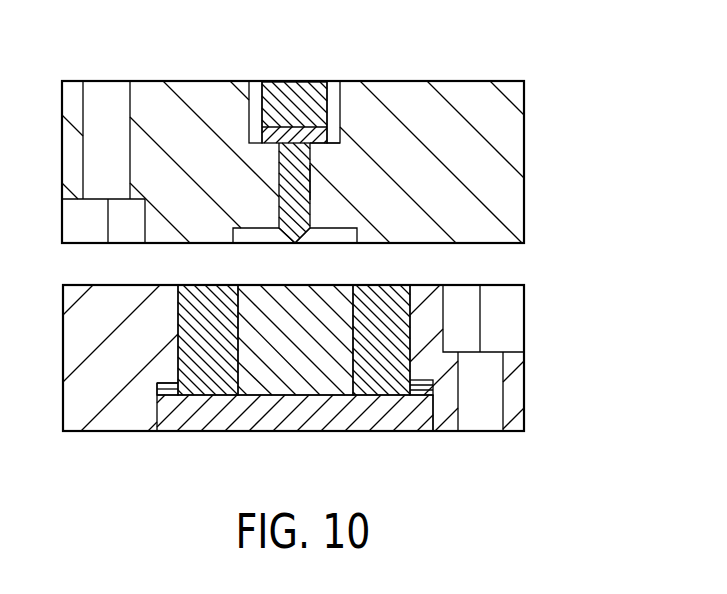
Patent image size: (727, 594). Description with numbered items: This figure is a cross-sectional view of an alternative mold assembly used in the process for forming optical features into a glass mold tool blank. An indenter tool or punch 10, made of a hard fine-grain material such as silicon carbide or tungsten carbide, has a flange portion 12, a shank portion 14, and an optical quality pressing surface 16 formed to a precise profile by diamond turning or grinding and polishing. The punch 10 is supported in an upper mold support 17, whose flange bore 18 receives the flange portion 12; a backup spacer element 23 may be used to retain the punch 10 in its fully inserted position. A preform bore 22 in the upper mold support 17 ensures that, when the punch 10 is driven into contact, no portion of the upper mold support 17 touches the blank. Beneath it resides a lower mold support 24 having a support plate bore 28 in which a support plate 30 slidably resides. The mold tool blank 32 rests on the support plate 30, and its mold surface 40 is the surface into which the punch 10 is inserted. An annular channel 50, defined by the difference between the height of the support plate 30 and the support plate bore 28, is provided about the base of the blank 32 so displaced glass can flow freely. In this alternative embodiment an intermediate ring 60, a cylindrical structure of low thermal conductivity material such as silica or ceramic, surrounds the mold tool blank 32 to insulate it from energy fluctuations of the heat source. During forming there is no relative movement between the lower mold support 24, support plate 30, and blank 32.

The indenter tool or punch 10 is at (282, 168).
The flange portion 12 is at (331, 152).
The shank portion 14 is at (311, 181).
The optical quality pressing surface 16 is at (283, 236).
The upper mold support 17 is at (527, 120).
The flange bore 18 is at (257, 92).
The preform bore 22 is at (352, 232).
The backup spacer element 23 is at (300, 81).
The lower mold support 24 is at (526, 372).
The support plate bore 28 is at (407, 398).
The support plate 30 is at (423, 433).
The mold tool blank 32 is at (252, 290).
The mold surface 40 is at (333, 286).
The annular channel 50 is at (172, 432).
The intermediate ring 60 is at (410, 313).